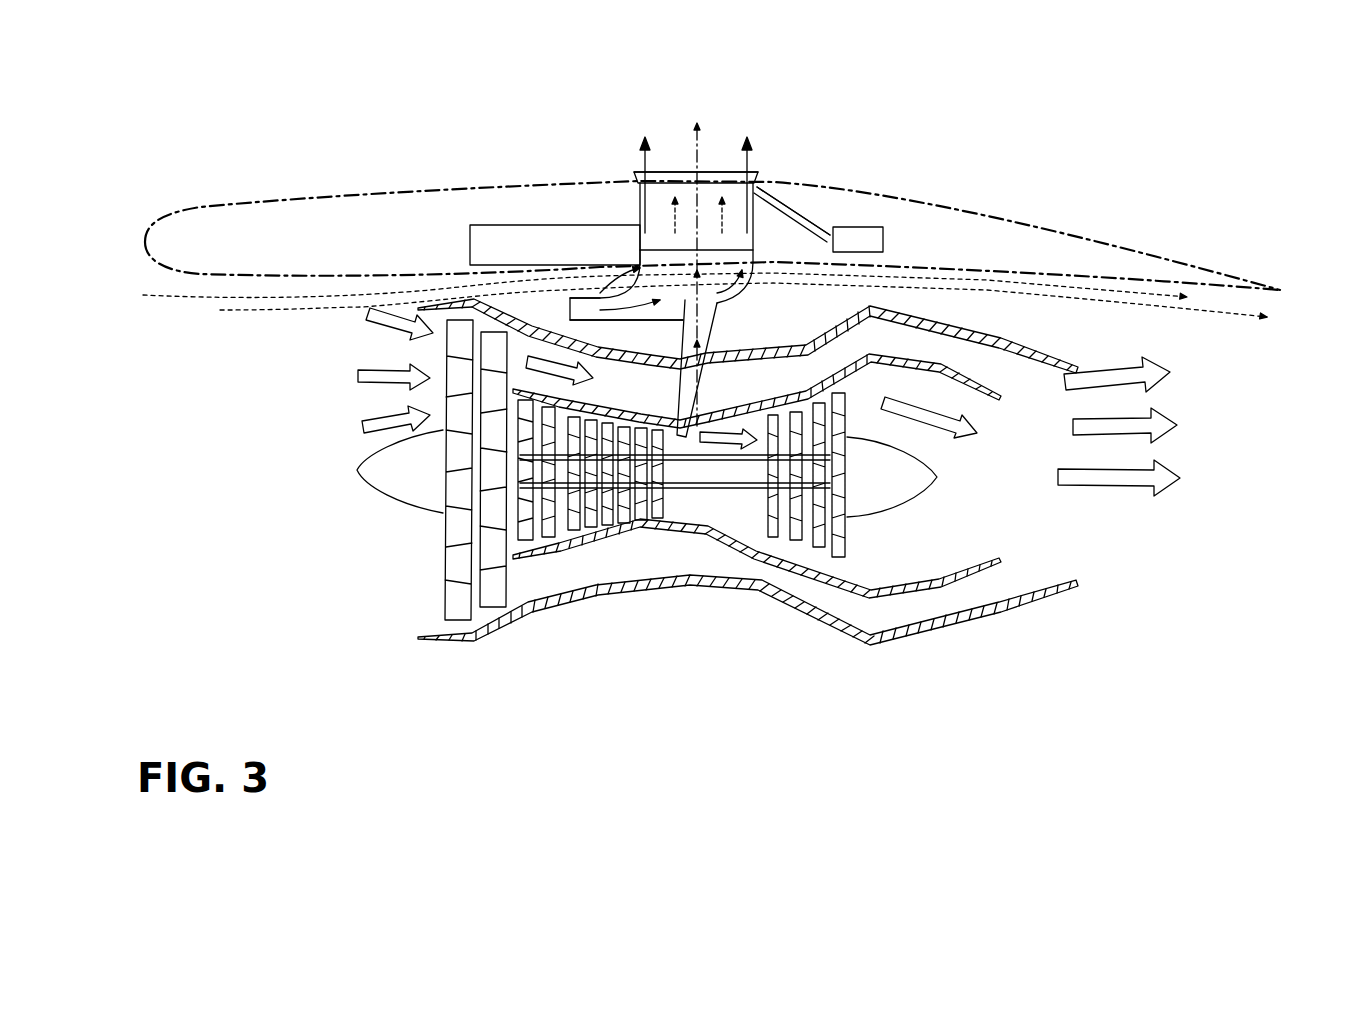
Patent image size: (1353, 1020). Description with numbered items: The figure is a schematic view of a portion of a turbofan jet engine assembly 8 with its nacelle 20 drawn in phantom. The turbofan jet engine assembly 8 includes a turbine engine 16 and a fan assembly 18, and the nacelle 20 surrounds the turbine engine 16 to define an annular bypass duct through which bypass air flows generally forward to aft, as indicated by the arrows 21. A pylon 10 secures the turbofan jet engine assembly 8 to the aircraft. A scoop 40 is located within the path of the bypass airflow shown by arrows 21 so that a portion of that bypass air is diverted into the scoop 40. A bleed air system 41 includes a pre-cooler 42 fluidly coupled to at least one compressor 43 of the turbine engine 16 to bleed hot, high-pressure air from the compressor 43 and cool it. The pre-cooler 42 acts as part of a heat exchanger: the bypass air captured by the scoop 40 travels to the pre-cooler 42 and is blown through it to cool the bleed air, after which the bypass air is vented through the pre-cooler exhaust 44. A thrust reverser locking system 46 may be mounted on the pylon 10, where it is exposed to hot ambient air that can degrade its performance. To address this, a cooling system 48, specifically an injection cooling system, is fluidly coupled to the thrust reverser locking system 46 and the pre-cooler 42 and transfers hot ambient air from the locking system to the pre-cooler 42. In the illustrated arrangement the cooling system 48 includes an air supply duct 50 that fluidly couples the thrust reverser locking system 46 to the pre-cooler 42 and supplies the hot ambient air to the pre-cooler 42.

The turbofan jet engine assembly 8 is at (752, 506).
The pylon 10 is at (500, 225).
The turbine engine 16 is at (410, 507).
The fan assembly 18 is at (440, 575).
The nacelle 20 is at (293, 198).
The bypass airflow arrows 21 is at (1213, 310).
The scoop 40 is at (590, 293).
The bleed air system 41 is at (678, 342).
The pre-cooler 42 is at (640, 203).
The compressor 43 is at (668, 520).
The pre-cooler exhaust 44 is at (757, 180).
The thrust reverser locking system 46 is at (873, 227).
The cooling system 48 is at (812, 212).
The air supply duct 50 is at (783, 203).